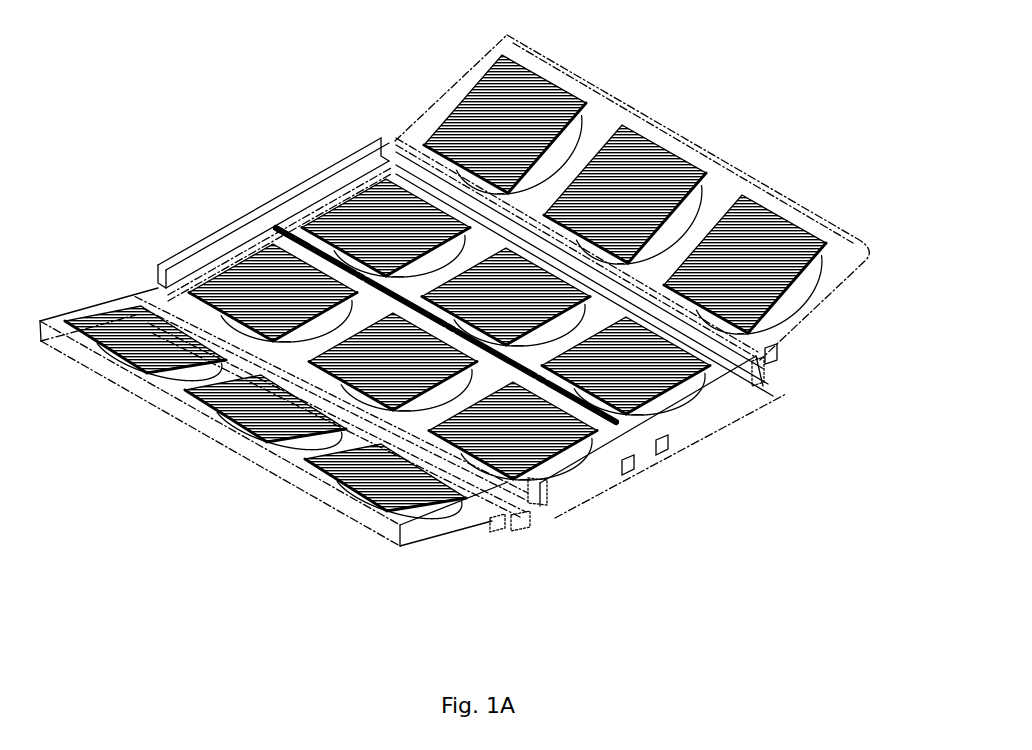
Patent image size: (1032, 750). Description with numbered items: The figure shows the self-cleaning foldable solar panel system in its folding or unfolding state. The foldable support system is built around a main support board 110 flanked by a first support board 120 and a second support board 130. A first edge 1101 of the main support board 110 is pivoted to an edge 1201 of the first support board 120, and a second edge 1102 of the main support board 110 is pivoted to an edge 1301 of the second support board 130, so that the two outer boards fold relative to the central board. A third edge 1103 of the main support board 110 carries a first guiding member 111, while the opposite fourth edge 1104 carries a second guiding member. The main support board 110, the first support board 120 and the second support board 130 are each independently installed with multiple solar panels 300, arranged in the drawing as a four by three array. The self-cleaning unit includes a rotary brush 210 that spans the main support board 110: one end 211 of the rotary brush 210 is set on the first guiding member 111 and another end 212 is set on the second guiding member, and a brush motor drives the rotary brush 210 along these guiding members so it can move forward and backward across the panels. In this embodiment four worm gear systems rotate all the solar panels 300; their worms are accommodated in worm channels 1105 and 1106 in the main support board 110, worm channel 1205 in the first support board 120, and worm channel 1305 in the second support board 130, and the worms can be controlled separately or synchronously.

The main support board 110 is at (707, 403).
The first guiding member 111 is at (370, 160).
The first edge of the main support board 1101 is at (522, 500).
The second edge of the main support board 1102 is at (755, 372).
The third edge of the main support board 1103 is at (278, 187).
The fourth edge of the main support board 1104 is at (657, 400).
The worm channel 1105 is at (625, 460).
The worm channel 1106 is at (657, 442).
The first support board 120 is at (133, 383).
The edge of the first support board 1201 is at (513, 517).
The worm channel 1205 is at (485, 517).
The second support board 130 is at (851, 257).
The edge of the second support board 1301 is at (768, 365).
The worm channel 1305 is at (770, 345).
The rotary brush 210 is at (500, 357).
The one end of the rotary brush 211 is at (268, 220).
The another end of the rotary brush 212 is at (607, 413).
The solar panel 300 is at (110, 313).